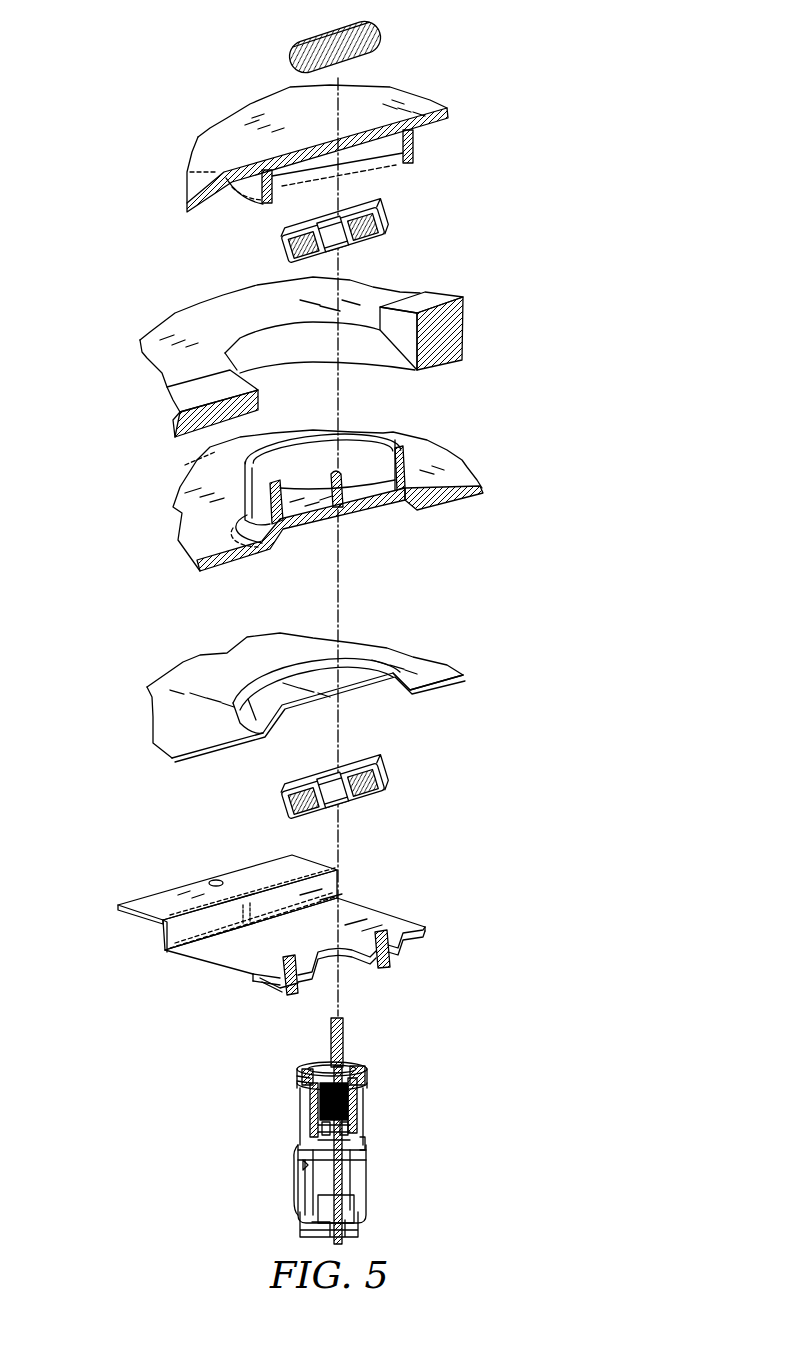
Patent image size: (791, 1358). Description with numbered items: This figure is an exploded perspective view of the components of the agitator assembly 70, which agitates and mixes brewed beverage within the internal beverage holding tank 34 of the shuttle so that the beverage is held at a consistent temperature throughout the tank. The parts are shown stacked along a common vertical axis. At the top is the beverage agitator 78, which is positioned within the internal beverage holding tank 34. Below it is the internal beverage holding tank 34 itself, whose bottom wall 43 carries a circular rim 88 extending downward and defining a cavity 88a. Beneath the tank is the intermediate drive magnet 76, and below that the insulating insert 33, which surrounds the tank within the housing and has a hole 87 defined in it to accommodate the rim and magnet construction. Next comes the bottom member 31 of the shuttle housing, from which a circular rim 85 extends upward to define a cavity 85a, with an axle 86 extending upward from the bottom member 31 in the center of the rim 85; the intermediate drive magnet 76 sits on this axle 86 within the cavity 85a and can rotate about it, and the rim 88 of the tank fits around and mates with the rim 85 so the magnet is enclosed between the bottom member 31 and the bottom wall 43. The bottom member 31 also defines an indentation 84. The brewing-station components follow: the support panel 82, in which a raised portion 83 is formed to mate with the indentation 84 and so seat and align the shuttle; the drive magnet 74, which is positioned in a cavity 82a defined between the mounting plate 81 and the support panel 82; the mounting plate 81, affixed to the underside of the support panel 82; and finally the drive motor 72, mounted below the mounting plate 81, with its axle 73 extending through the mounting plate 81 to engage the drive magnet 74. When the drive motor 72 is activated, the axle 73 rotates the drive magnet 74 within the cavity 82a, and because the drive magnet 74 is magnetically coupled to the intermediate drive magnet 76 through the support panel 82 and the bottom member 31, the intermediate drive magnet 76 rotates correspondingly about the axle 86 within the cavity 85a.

The agitator assembly 70 is at (190, 55).
The beverage agitator 78 is at (380, 36).
The internal beverage holding tank 34 is at (331, 148).
The bottom wall 43 is at (450, 130).
The circular rim 88 is at (414, 146).
The cavity 88a is at (392, 166).
The intermediate drive magnet 76 is at (386, 222).
The insulating insert 33 is at (303, 357).
The hole 87 is at (385, 368).
The axle 86 is at (344, 485).
The circular rim 85 is at (400, 460).
The cavity 85a is at (190, 463).
The bottom member 31 is at (311, 499).
The indentation 84 is at (318, 520).
The raised portion 83 is at (367, 673).
The support panel 82 is at (288, 678).
The cavity 82a is at (393, 687).
The drive magnet 74 is at (386, 778).
The mounting plate 81 is at (168, 958).
The axle 73 is at (345, 1042).
The drive motor 72 is at (368, 1115).